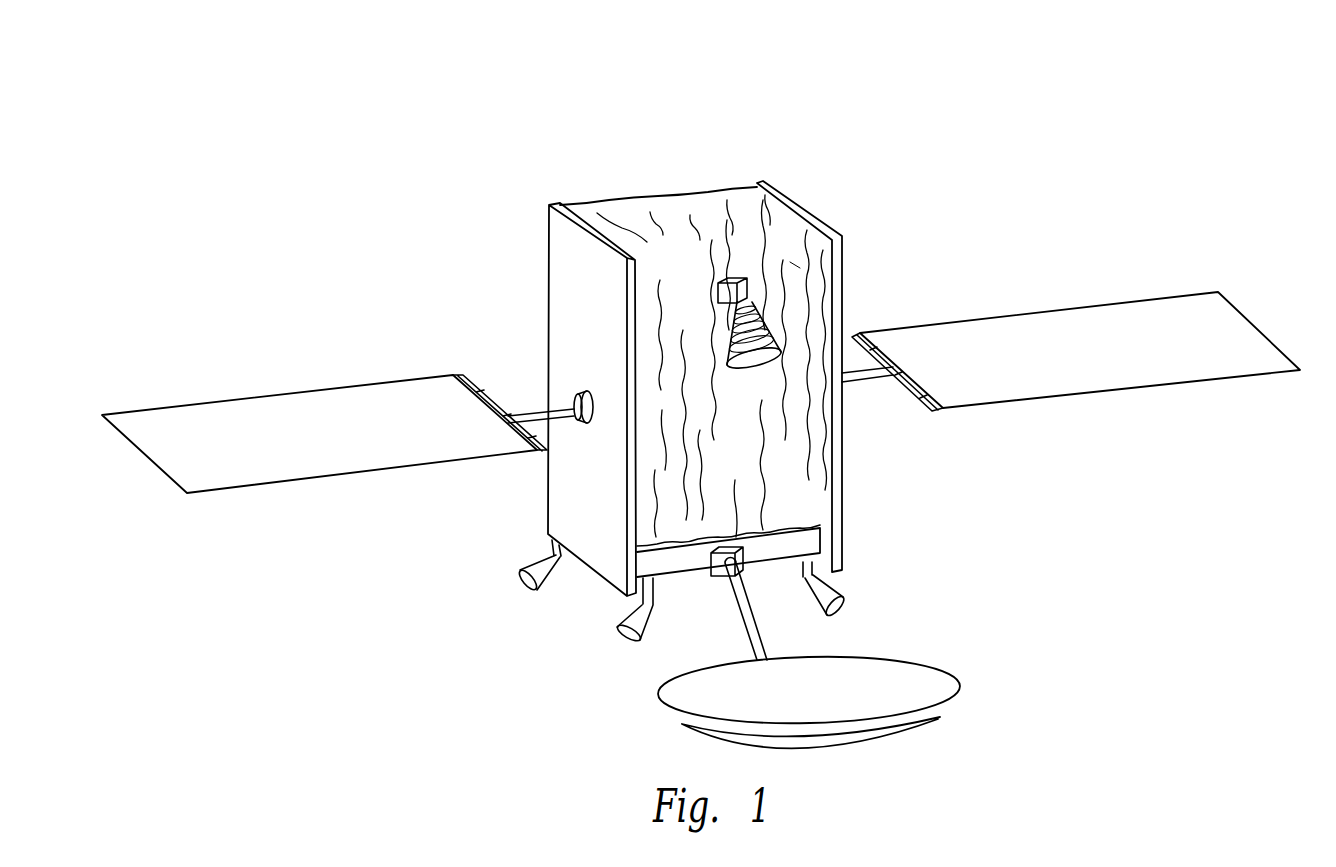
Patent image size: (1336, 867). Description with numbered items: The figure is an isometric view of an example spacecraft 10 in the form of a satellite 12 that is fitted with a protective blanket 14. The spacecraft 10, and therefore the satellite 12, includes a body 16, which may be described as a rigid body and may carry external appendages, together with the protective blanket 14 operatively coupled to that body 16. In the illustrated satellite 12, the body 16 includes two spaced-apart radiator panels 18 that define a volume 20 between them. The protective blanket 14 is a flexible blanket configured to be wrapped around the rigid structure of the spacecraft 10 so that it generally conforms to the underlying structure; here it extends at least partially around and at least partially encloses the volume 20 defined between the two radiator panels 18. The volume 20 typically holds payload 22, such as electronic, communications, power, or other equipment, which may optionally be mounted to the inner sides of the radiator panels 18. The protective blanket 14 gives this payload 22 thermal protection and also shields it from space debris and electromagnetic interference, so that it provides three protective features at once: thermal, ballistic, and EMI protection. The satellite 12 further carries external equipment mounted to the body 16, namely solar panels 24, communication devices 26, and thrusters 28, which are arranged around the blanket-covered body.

The spacecraft 10 is at (962, 102).
The satellite 12 is at (903, 100).
The protective blanket 14 is at (622, 195).
The body 16 is at (809, 198).
The radiator panels 18 is at (548, 290).
The volume 20 is at (703, 170).
The payload 22 is at (805, 273).
The solar panels 24 is at (250, 397).
The communication devices 26 is at (730, 333).
The thrusters 28 is at (528, 567).